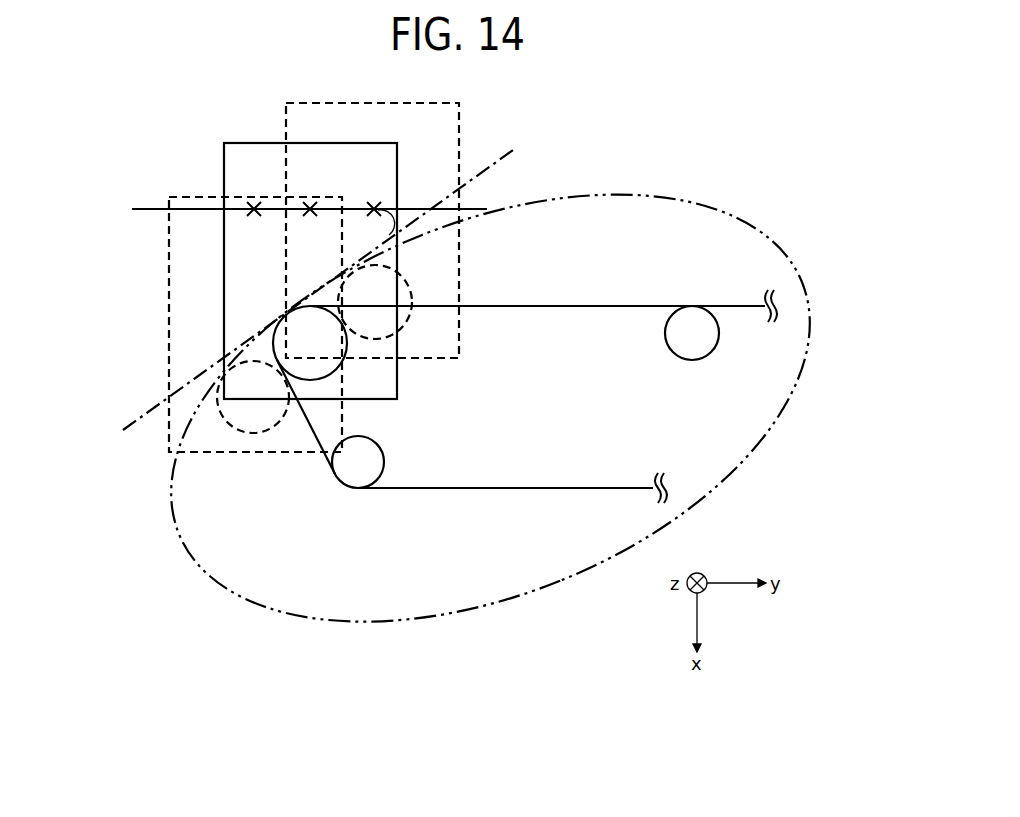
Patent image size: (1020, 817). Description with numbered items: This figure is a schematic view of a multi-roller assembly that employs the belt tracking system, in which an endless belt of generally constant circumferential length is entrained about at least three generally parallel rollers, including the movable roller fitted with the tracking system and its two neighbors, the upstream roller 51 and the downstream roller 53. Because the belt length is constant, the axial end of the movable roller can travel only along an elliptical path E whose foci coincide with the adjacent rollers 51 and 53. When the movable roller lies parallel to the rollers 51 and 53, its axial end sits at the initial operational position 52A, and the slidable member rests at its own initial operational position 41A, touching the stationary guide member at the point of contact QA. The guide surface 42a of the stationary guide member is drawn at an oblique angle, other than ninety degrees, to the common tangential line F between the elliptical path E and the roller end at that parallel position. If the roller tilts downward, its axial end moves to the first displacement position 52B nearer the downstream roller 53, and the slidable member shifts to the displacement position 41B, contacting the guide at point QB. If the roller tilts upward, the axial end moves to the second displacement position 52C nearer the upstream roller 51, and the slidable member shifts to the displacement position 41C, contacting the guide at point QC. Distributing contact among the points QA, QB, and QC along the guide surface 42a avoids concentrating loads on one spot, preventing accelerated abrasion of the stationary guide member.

The elliptical path E is at (630, 195).
The common tangential line F is at (478, 177).
The initial operational position 41A is at (224, 257).
The corresponding displacement position 41B is at (168, 337).
The corresponding displacement position 41C is at (460, 123).
The guide surface 42a is at (147, 208).
The point of contact QA is at (310, 204).
The point of contact QB is at (253, 204).
The point of contact QC is at (373, 204).
The roller 51 is at (690, 360).
The initial operational position 52A is at (328, 376).
The first displacement position 52B is at (253, 433).
The second displacement position 52C is at (404, 292).
The roller 53 is at (384, 460).